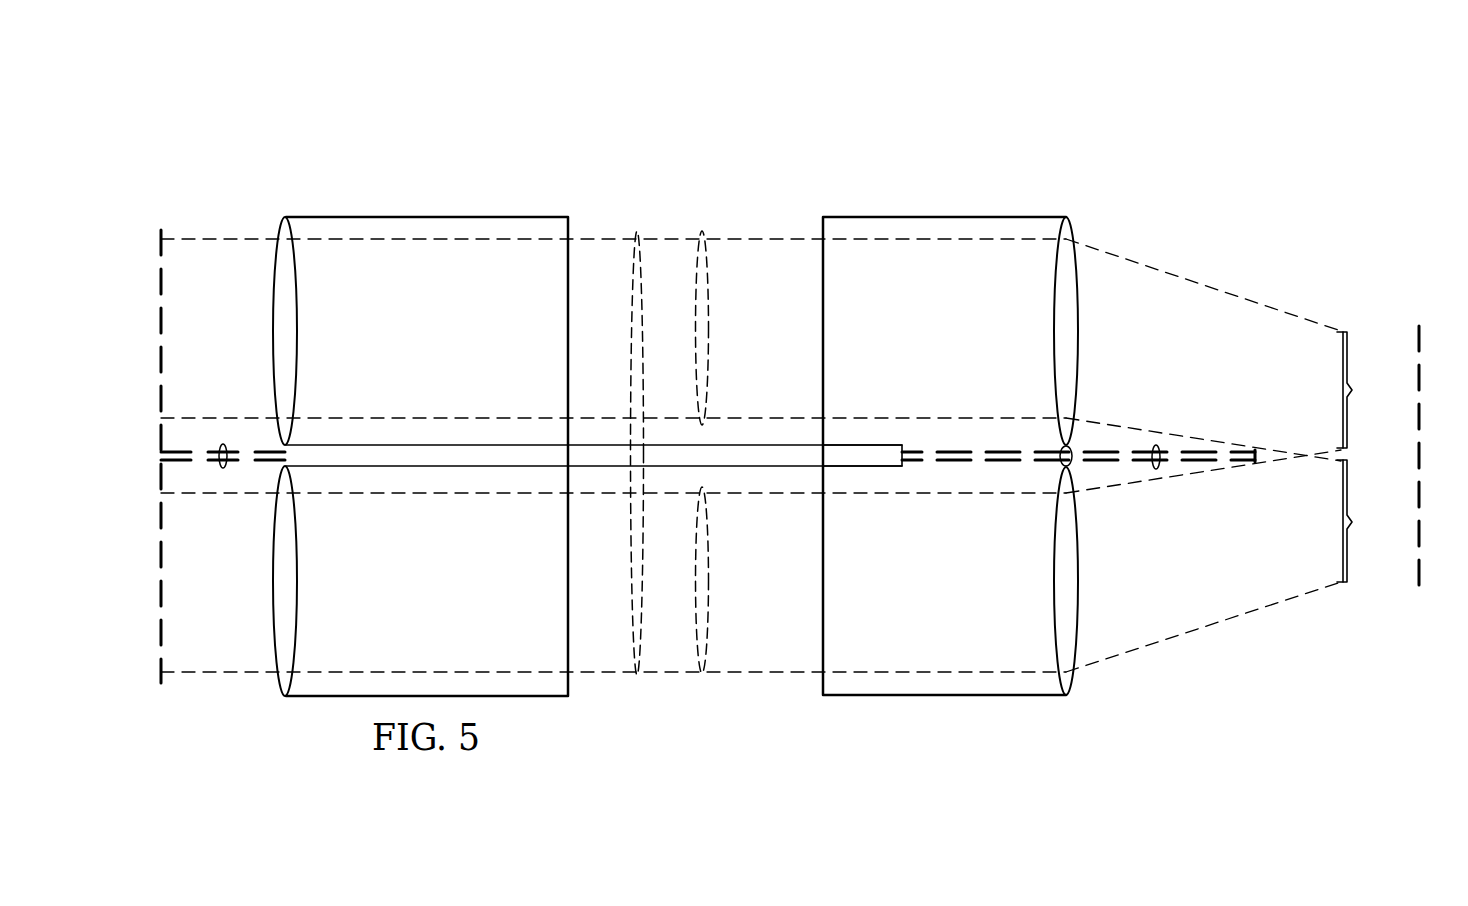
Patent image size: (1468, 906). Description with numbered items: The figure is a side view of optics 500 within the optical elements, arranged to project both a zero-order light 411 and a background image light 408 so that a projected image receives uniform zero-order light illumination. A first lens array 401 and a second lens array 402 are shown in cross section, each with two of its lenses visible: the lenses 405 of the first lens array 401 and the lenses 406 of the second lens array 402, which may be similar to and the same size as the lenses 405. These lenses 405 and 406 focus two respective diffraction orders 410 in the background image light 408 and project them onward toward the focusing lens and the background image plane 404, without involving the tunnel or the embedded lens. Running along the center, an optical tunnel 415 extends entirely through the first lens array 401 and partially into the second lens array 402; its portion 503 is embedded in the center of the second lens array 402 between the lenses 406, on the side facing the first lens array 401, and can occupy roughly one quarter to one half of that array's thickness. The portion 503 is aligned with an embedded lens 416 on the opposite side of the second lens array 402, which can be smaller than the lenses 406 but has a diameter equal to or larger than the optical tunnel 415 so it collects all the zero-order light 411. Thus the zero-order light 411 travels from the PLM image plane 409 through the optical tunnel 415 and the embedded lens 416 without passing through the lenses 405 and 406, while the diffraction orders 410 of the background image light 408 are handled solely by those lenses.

The optics 500 is at (554, 134).
The first lens array 401 is at (427, 207).
The second lens array 402 is at (946, 207).
The background image plane 404 is at (1437, 563).
The lenses 405 is at (283, 331).
The lenses 406 is at (1069, 331).
The background image light 408 is at (637, 679).
The PLM image plane 409 is at (154, 361).
The diffraction orders 410 is at (702, 232).
The zero-order light 411 is at (223, 443).
The optical tunnel 415 is at (763, 476).
The embedded lens 416 is at (1059, 453).
The portion of the optical tunnel 503 is at (880, 432).